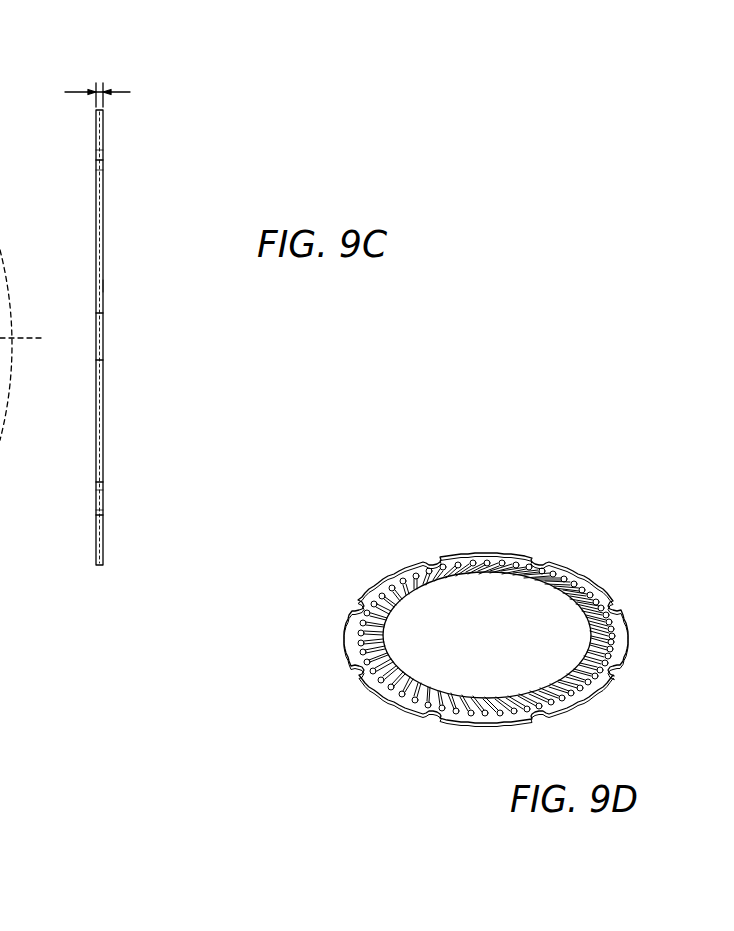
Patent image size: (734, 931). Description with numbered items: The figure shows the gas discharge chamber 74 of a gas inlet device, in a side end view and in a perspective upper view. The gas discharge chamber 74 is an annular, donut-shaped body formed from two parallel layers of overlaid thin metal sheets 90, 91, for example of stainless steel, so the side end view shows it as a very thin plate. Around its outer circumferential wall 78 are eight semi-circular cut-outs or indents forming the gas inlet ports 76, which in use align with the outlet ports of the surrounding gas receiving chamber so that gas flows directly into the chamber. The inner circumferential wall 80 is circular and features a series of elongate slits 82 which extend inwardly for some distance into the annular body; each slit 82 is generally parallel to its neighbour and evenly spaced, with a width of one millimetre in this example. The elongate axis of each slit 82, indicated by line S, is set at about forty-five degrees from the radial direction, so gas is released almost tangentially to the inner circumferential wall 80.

In FIG. 9C, the gas discharge chamber 74 is at (118, 116).
In FIG. 9D, the gas discharge chamber 74 is at (491, 607).
In FIG. 9C, the gas inlet ports 76 is at (103, 178).
In FIG. 9D, the gas inlet ports 76 is at (533, 558).
In FIG. 9D, the outer circumferential wall 78 is at (386, 697).
In FIG. 9D, the inner circumferential wall 80 is at (386, 648).
In FIG. 9D, the slits 82 is at (597, 648).
In FIG. 9C, the thin metal sheet 90 is at (95, 266).
In FIG. 9C, the thin metal sheet 91 is at (103, 286).
In FIG. 9C, the line S- S is at (0, 447).